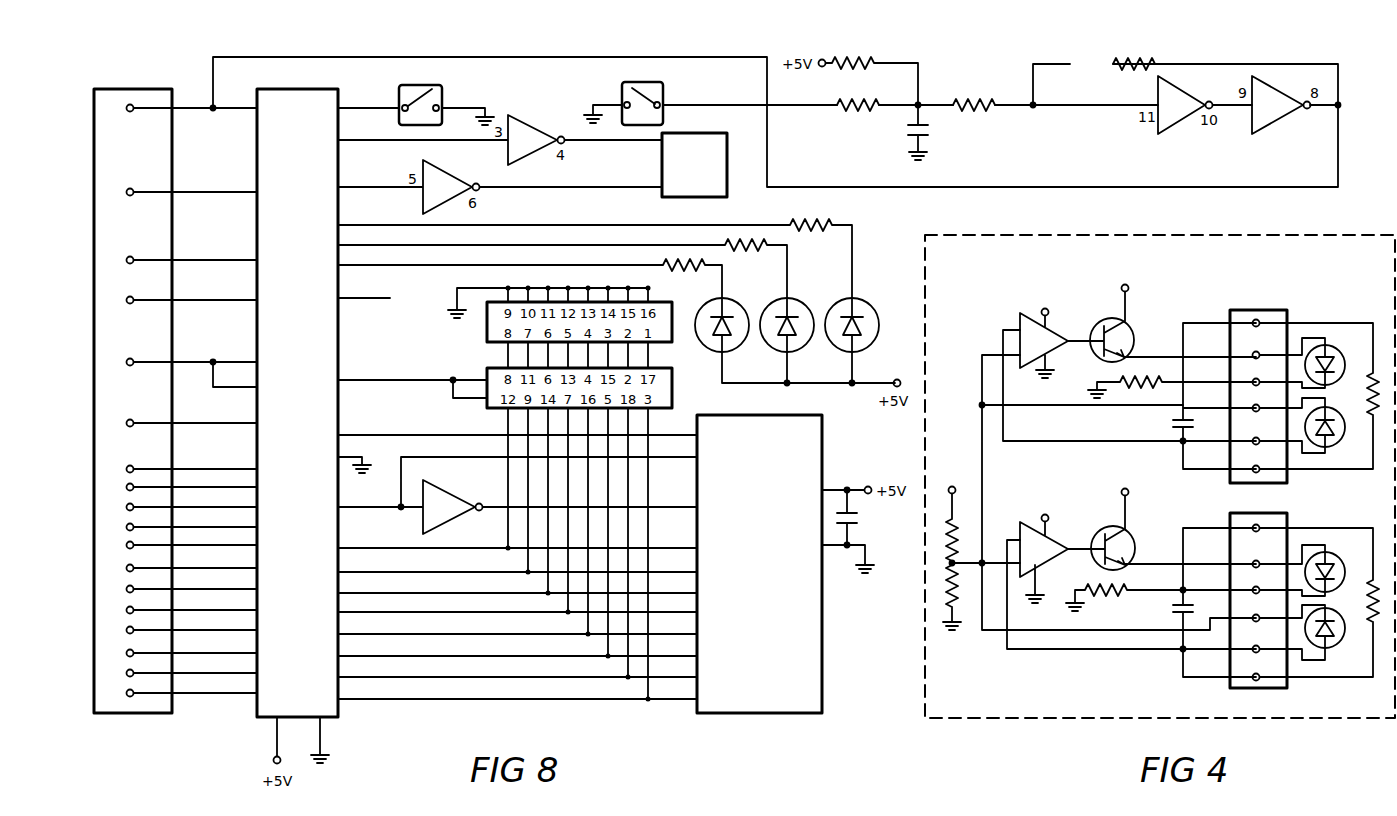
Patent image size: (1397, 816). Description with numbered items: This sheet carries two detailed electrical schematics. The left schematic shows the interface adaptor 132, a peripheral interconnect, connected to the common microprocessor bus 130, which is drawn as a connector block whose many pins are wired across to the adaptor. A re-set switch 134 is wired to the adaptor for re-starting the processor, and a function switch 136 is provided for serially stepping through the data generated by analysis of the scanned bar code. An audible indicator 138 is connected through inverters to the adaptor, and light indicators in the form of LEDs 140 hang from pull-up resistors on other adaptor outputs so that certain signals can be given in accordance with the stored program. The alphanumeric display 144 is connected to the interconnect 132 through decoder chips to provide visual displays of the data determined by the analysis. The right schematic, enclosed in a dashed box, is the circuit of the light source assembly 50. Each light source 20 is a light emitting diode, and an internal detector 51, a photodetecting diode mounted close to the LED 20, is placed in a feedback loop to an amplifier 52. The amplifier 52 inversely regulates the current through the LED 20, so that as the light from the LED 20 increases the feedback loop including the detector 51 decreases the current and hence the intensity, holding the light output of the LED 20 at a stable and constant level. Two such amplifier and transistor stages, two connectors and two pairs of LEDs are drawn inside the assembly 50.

In FIG. 8, the common microprocessor bus 130 is at (95, 90).
In FIG. 8, the interface adaptor 132 is at (332, 82).
In FIG. 8, the re-set switch 134 is at (663, 86).
In FIG. 8, the function switch 136 is at (420, 83).
In FIG. 8, the audible indicator 138 is at (702, 176).
In FIG. 8, the light indicators 140 is at (774, 272).
In FIG. 8, the alphanumeric display 144 is at (740, 716).
In FIG. 4, the light source assembly 50 is at (1364, 236).
In FIG. 4, the amplifier 52 is at (1091, 278).
In FIG. 4, the internal detector 51 is at (1343, 447).
In FIG. 4, the light source 20 is at (1340, 351).